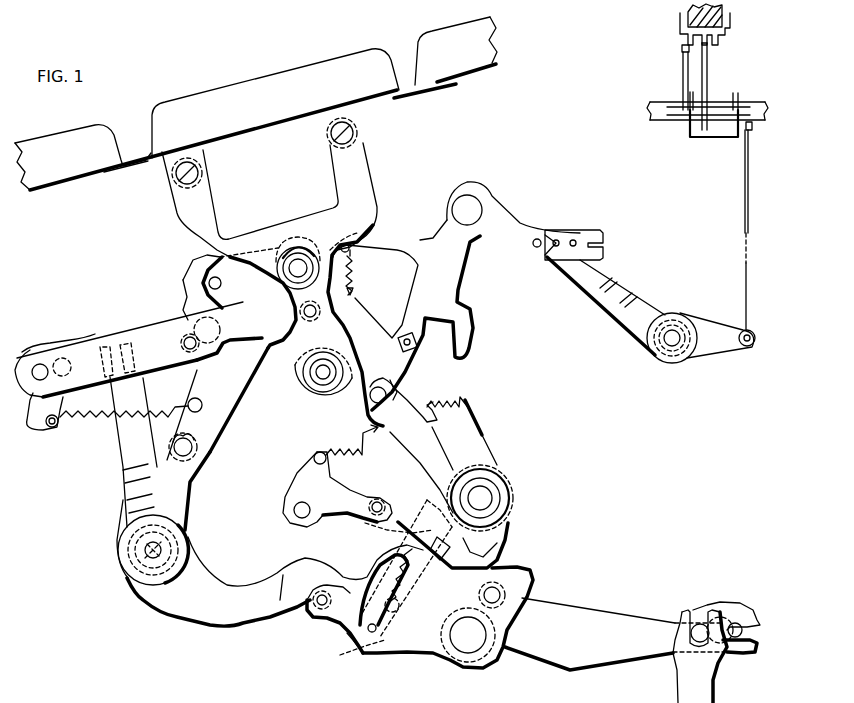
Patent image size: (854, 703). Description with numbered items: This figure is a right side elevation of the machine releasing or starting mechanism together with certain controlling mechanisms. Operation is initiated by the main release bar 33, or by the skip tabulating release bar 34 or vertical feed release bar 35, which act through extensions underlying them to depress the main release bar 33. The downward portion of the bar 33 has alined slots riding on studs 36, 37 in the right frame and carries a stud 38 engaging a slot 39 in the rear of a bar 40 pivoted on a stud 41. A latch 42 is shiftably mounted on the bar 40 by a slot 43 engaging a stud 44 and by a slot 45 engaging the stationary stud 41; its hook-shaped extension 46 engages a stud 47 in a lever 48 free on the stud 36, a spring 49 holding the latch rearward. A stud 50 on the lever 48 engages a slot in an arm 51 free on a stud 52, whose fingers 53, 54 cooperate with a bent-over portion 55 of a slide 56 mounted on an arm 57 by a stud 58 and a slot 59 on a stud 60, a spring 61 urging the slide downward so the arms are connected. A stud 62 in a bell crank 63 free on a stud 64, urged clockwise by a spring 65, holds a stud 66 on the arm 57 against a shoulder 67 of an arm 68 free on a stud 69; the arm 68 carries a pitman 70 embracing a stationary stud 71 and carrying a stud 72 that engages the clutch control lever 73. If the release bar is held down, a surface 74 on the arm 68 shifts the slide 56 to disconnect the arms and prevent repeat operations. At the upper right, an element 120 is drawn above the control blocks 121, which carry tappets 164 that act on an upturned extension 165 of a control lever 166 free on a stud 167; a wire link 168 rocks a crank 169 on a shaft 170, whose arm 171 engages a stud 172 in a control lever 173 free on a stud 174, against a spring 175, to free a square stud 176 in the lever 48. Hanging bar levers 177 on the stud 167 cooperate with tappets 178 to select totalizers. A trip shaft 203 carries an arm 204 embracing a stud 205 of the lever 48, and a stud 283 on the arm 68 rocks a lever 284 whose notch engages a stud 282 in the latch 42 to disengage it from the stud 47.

The main release bar 33 is at (225, 97).
The skip tabulating release bar 34 is at (58, 140).
The vertical feed release bar 35 is at (443, 43).
The stud 36 is at (304, 262).
The stud 37 is at (312, 378).
The stud 38 is at (301, 313).
The slot 39 is at (352, 296).
The bar 40 is at (262, 339).
The stud 41 is at (36, 372).
The latch 42 is at (68, 340).
The slot 43 is at (185, 312).
The stud 44 is at (184, 344).
The slot 45 is at (70, 366).
The hook-shaped extension 46 is at (190, 276).
The stud 47 is at (222, 283).
The lever 48 is at (227, 417).
The spring 49 is at (92, 421).
The stud 50 is at (374, 390).
The arm 51 is at (460, 402).
The stud 52 is at (470, 470).
The finger 53 is at (495, 552).
The finger 54 is at (408, 532).
The bent-over portion 55 is at (430, 510).
The slide 56 is at (368, 530).
The arm 57 is at (343, 548).
The stud 58 is at (432, 573).
The slot 59 is at (357, 648).
The stud 60 is at (350, 632).
The spring 61 is at (410, 598).
The stud 62 is at (370, 500).
The bell crank 63 is at (360, 473).
The stud 64 is at (303, 505).
The spring 65 is at (352, 432).
The stud 66 is at (378, 626).
The shoulder 67 is at (380, 593).
The arm 68 is at (405, 652).
The stud 69 is at (470, 647).
The pitman 70 is at (608, 640).
The stud 71 is at (742, 630).
The stud 72 is at (698, 630).
The clutch control lever 73 is at (683, 677).
The surface 74 is at (384, 590).
The solenoid core 120 is at (723, 12).
The control block 121 is at (680, 20).
The tappet 164 is at (682, 47).
The upturned extension 165 is at (683, 75).
The control lever 166 is at (690, 126).
The stud 167 is at (751, 103).
The wire link 168 is at (745, 182).
The crank 169 is at (703, 347).
The shaft 170 is at (658, 337).
The arm 171 is at (618, 290).
The stud 172 is at (540, 243).
The control lever 173 is at (457, 290).
The stud 174 is at (470, 192).
The spring 175 is at (352, 264).
The square stud 176 is at (405, 330).
The hanging bar lever 177 is at (705, 73).
The tappet 178 is at (707, 46).
The trip shaft 203 is at (163, 552).
The arm 204 is at (190, 482).
The stud 205 is at (210, 442).
The stud 282 is at (117, 349).
The stud 283 is at (317, 607).
The lever 284 is at (210, 578).